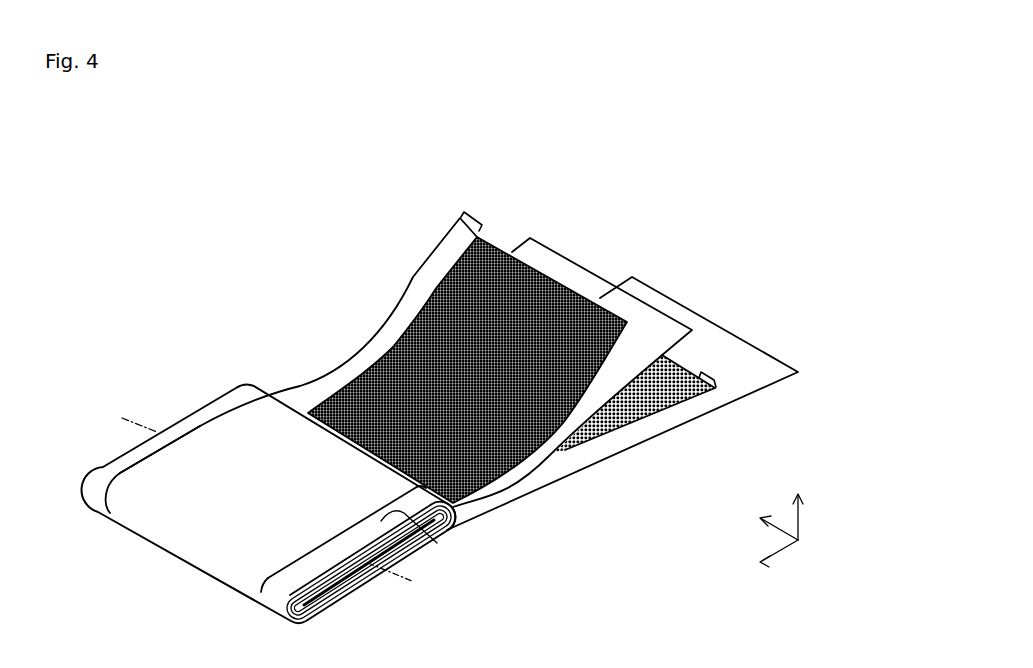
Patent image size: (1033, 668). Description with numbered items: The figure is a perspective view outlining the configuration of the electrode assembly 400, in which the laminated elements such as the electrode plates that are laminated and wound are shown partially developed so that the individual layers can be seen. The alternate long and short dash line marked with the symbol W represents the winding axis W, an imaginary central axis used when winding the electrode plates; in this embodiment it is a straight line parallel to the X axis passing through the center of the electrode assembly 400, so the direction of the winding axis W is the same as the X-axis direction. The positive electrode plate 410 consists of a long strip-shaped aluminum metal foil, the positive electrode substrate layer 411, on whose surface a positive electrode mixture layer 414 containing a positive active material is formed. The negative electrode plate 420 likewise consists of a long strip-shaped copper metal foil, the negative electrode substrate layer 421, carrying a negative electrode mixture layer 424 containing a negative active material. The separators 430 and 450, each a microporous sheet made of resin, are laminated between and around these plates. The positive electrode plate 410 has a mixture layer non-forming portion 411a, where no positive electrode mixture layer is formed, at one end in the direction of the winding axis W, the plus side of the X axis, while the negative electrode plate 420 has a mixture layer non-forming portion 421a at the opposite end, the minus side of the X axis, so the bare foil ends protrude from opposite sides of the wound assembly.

The electrode assembly 400 is at (674, 162).
The positive electrode plate 410 is at (368, 238).
The positive electrode substrate layer 411 is at (417, 278).
The mixture layer non-forming portion 411a is at (480, 230).
The positive electrode mixture layer 414 is at (417, 333).
The negative electrode plate 420 is at (718, 462).
The negative electrode substrate layer 421 is at (625, 432).
The mixture layer non-forming portion 421a is at (711, 372).
The negative electrode mixture layer 424 is at (607, 414).
The separator 430 is at (555, 260).
The separator 450 is at (742, 380).
The winding axis W is at (413, 578).